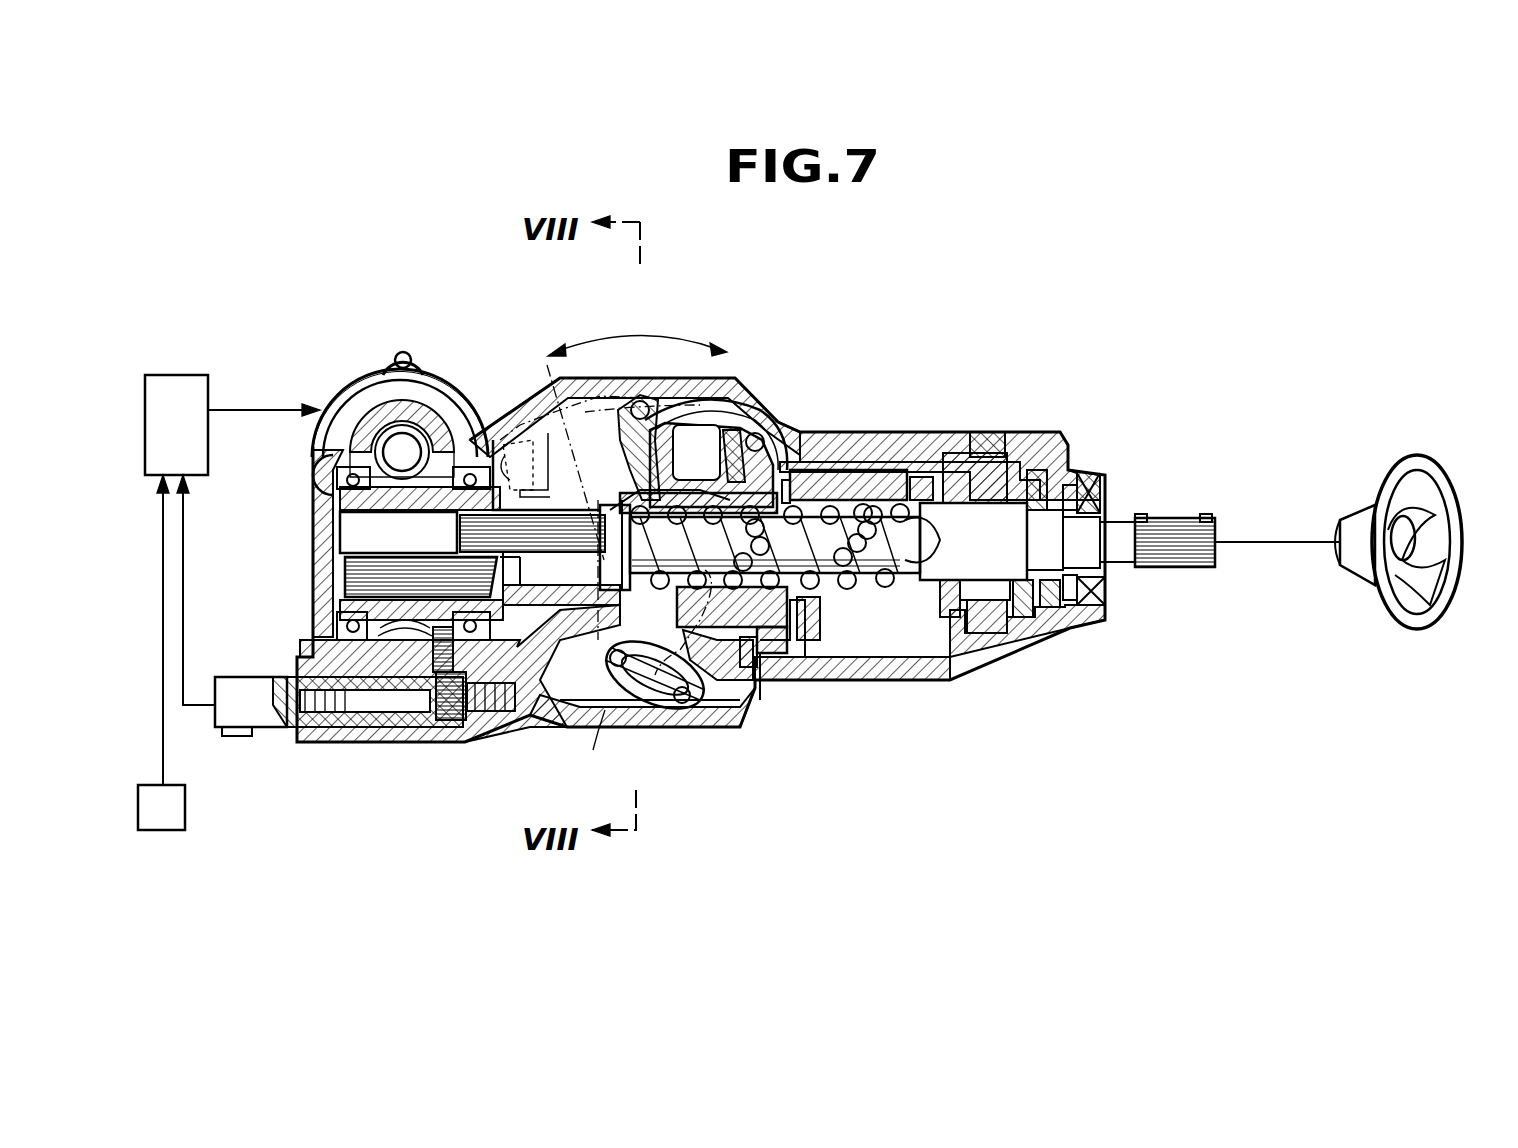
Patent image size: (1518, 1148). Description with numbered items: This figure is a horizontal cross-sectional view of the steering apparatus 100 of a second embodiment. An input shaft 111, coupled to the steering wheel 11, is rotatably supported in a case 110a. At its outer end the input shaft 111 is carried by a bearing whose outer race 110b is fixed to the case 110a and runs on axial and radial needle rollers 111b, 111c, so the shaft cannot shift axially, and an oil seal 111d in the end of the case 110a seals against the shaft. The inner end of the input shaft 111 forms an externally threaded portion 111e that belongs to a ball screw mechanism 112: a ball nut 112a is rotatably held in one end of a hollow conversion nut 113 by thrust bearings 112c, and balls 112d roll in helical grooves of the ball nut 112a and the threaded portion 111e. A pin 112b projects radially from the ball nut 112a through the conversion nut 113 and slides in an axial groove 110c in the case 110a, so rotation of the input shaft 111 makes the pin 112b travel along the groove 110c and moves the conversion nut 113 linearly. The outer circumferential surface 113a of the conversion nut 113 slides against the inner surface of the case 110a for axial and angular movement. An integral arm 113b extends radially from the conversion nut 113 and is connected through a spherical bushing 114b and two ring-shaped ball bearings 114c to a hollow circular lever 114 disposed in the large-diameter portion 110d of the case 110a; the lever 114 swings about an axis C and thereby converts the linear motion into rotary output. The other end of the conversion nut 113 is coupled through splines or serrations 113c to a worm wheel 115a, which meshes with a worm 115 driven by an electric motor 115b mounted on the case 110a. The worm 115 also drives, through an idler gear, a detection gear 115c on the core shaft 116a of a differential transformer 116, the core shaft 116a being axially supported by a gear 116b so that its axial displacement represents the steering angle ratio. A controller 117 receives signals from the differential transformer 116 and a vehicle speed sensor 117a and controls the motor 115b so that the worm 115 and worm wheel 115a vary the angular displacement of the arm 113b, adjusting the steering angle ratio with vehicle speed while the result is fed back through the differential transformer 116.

The steering apparatus 100 is at (1062, 306).
The steering wheel 11 is at (1398, 470).
The case 110a is at (1052, 450).
The outer race 110b is at (990, 645).
The axial groove 110c is at (905, 668).
The large-diameter portion 110d is at (598, 360).
The input shaft 111 is at (1205, 520).
The axial needle rollers 111b is at (1000, 645).
The radial needle rollers 111c is at (1030, 640).
The oil seal 111d is at (1098, 582).
The externally threaded portion 111e is at (875, 580).
The ball screw mechanism 112 is at (758, 700).
The ball nut 112a is at (713, 700).
The pin 112b is at (793, 665).
The thrust bearings 112c is at (700, 720).
The balls 112d is at (840, 655).
The conversion nut 113 is at (858, 445).
The outer circumferential surface 113a is at (918, 450).
The arm 113b is at (668, 360).
The splines or serrations 113c is at (350, 560).
The lever 114 is at (700, 350).
The spherical bushing 114b is at (755, 420).
The ring-shaped bearings 114c is at (762, 452).
The worm 115 is at (378, 440).
The worm wheel 115a is at (335, 510).
The electric motor 115b is at (452, 380).
The detection gear 115c is at (450, 722).
The differential transformer 116 is at (270, 735).
The core shaft 116a is at (412, 725).
The gear 116b is at (495, 715).
The controller 117 is at (188, 372).
The vehicle speed sensor 117a is at (185, 828).
The axis C is at (591, 744).